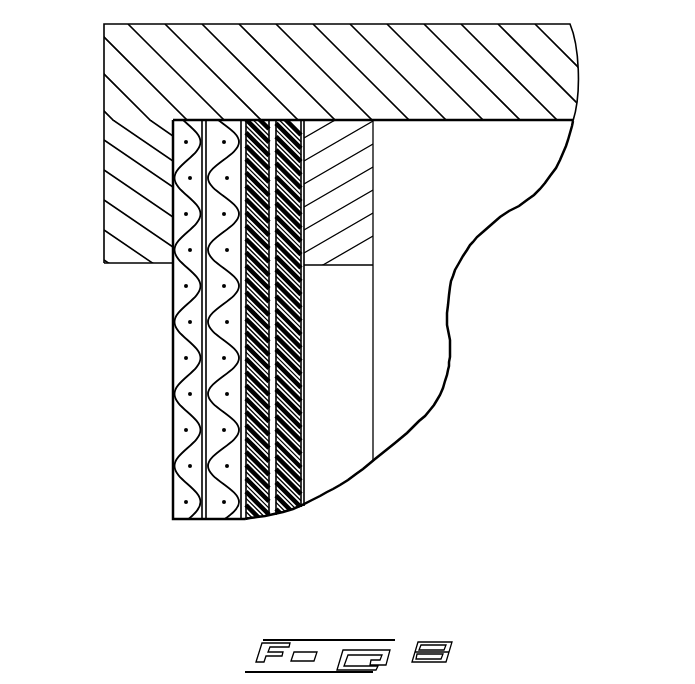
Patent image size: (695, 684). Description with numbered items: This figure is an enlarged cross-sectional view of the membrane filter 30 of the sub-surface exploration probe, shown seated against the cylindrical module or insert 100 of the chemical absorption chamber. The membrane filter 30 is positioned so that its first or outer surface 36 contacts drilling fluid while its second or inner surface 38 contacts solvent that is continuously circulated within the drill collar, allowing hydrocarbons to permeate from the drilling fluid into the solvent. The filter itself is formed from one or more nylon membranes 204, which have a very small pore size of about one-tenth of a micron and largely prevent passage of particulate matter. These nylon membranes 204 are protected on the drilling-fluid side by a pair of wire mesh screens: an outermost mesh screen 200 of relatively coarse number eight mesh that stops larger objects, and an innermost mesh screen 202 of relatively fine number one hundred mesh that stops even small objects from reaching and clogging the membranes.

The cylindrical module or insert 100 is at (560, 88).
The outermost mesh screen 200 is at (236, 351).
The outer surface 36 is at (243, 450).
The innermost mesh screen 202 is at (228, 508).
The nylon membranes 204 is at (352, 351).
The inner surface 38 is at (298, 437).
The membrane filter 30 is at (305, 357).